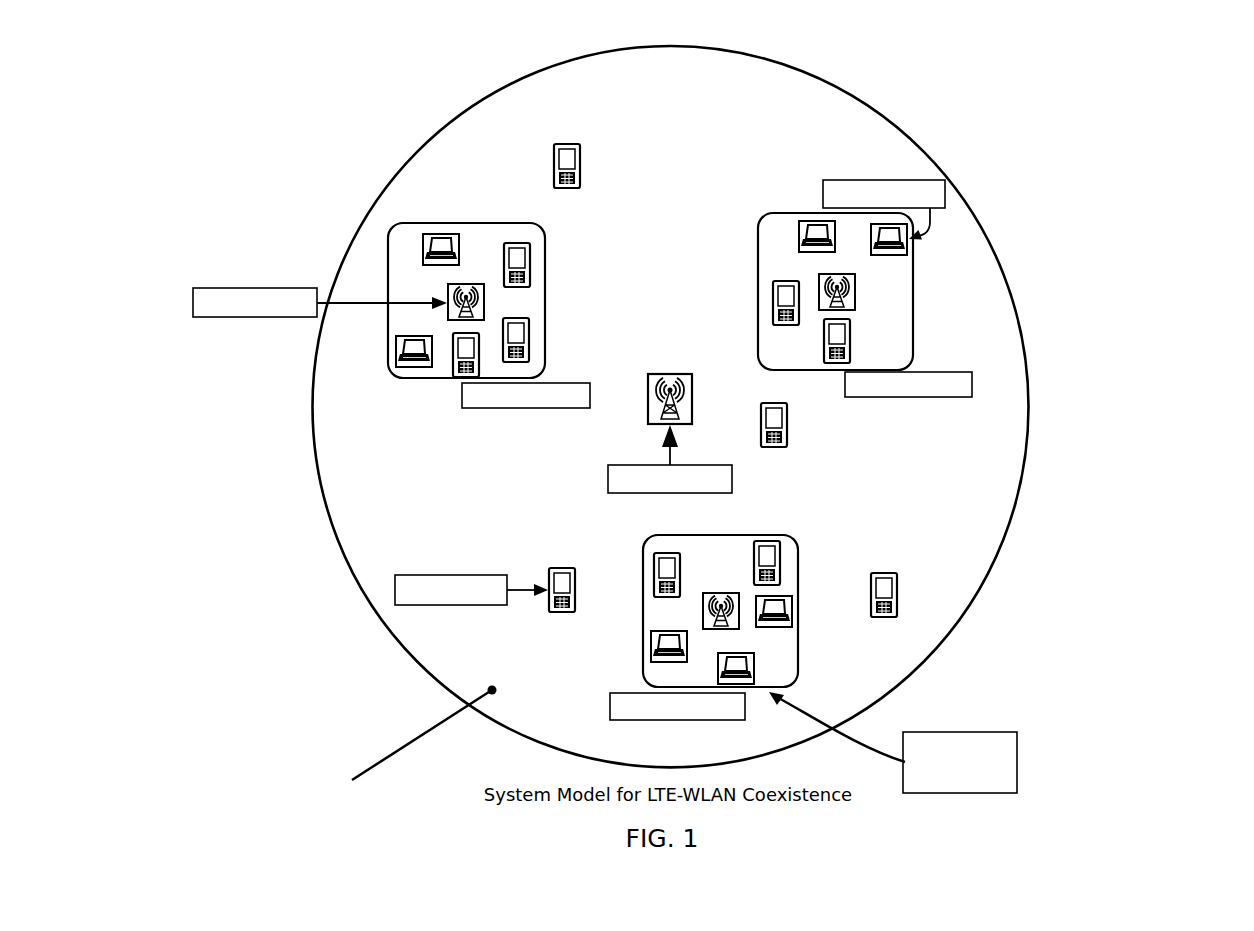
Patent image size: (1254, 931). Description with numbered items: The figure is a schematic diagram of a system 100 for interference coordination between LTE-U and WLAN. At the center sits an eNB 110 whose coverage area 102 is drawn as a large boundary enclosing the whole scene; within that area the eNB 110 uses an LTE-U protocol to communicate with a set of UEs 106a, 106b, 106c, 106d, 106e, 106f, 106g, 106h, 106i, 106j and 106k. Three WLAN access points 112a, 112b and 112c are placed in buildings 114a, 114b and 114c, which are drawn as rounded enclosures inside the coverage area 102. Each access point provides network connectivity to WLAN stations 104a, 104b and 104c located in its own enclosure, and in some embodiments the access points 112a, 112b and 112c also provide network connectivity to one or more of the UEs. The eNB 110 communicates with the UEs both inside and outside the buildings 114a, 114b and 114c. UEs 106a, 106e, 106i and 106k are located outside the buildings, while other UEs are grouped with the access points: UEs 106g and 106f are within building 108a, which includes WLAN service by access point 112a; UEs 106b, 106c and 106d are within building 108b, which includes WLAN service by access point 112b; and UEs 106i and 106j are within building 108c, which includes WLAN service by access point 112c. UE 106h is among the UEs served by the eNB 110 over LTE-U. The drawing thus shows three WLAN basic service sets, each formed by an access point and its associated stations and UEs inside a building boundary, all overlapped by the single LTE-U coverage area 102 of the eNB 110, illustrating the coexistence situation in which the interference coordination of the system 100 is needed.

The system 100 is at (215, 84).
The coverage area 102 is at (337, 273).
The WLAN station 104a is at (822, 252).
The WLAN station 104b is at (423, 245).
The WLAN station 104c is at (795, 612).
The UE 106a is at (553, 163).
The UE 106b is at (503, 250).
The UE 106c is at (455, 377).
The UE 106d is at (530, 340).
The UE 106e is at (558, 567).
The UE 106f is at (850, 332).
The UE 106g is at (787, 327).
The UE 106h is at (788, 442).
The UE 106i is at (667, 552).
The UE 106j is at (770, 540).
The UE 106k is at (883, 572).
The building 108a is at (999, 264).
The building 108b is at (339, 315).
The building 108c is at (689, 624).
The eNB 110 is at (670, 373).
The WLAN access point 112a is at (855, 290).
The WLAN access point 112b is at (447, 285).
The WLAN access point 112c is at (740, 632).
The building 114a is at (783, 213).
The building 114b is at (505, 223).
The building 114c is at (760, 692).